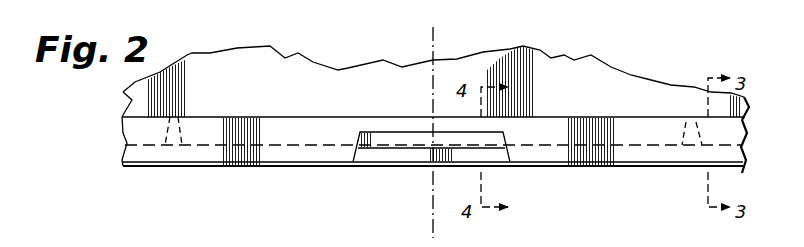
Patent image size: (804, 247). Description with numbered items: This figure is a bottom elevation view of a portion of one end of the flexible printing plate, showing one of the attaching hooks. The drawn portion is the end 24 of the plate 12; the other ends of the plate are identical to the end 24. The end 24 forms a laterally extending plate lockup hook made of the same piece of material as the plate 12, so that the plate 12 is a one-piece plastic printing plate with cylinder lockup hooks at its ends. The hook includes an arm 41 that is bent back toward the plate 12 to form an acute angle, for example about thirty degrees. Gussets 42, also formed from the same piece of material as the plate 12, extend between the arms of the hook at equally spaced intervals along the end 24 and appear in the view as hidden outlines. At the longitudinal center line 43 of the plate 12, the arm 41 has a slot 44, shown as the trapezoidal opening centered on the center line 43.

The flexible printing plate 12 is at (572, 62).
The end of plate 24 is at (640, 177).
The arm 41 is at (225, 134).
The gussets 42 is at (178, 128).
The longitudinal center line 43 is at (432, 58).
The slot 44 is at (395, 140).